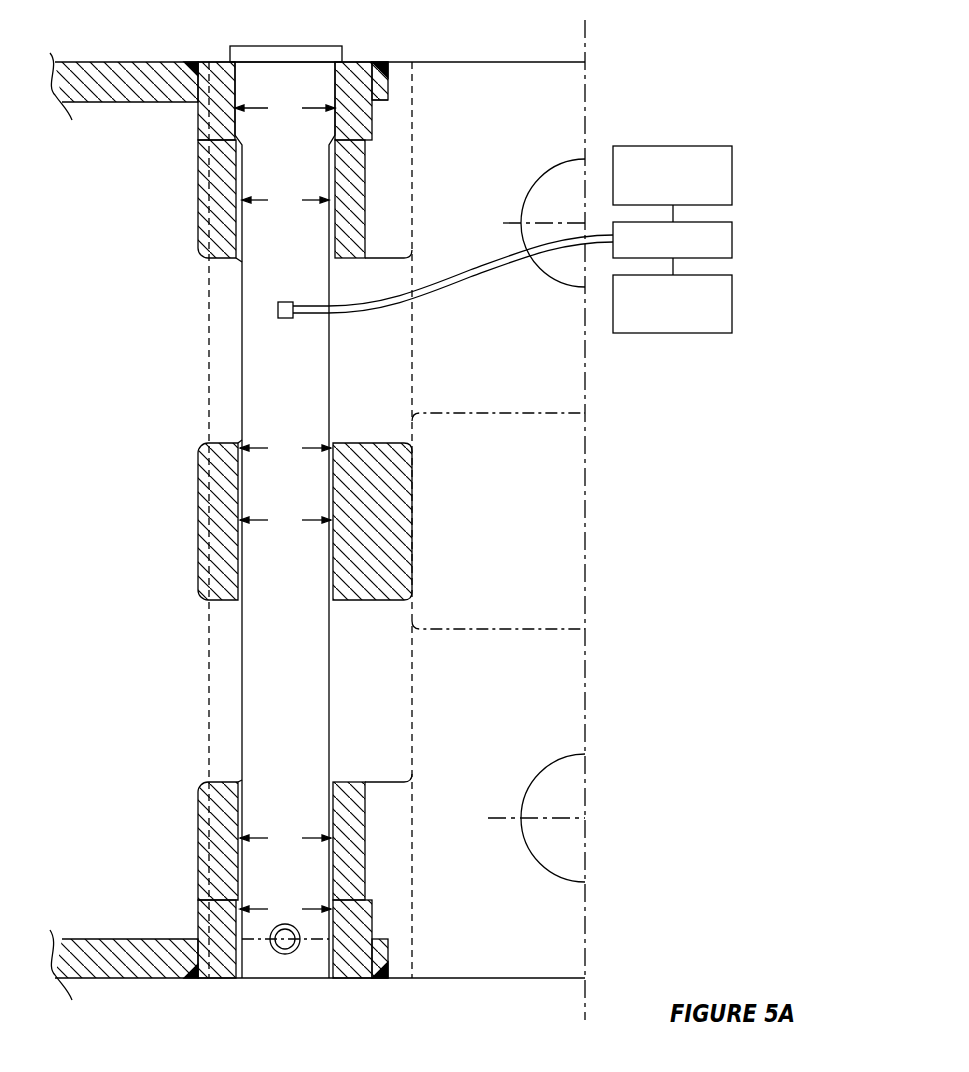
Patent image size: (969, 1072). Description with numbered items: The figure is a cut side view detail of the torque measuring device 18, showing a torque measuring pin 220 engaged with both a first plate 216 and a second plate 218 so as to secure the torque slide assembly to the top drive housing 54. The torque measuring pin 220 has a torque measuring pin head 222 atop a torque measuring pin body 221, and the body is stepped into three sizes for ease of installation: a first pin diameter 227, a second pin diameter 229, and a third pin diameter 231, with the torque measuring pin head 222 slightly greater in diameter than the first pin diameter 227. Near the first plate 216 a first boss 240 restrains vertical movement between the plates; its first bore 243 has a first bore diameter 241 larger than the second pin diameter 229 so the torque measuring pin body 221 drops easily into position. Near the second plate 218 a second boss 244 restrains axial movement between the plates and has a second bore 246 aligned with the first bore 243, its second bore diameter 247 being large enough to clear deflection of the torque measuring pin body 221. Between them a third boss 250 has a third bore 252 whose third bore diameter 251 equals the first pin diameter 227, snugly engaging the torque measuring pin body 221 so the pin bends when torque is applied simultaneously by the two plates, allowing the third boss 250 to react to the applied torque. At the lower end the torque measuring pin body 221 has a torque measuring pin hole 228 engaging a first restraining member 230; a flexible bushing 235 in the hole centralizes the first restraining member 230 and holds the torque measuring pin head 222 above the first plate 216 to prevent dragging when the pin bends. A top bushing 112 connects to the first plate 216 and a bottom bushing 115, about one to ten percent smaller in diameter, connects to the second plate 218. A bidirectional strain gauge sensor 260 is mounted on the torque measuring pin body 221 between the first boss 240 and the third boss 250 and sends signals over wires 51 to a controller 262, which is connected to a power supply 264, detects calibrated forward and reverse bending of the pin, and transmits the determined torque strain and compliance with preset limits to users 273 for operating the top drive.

The torque measuring device 18 is at (385, 110).
The wires 51 is at (462, 283).
The top drive housing 54 is at (550, 110).
The top bushing 112 is at (373, 85).
The bottom bushing 115 is at (372, 958).
The first plate 216 is at (133, 62).
The second plate 218 is at (140, 978).
The torque measuring pin 220 is at (333, 352).
The torque measuring pin body 221 is at (329, 685).
The torque measuring pin head 222 is at (317, 46).
The first pin diameter 227 is at (285, 519).
The torque measuring pin hole 228 is at (289, 950).
The second pin diameter 229 is at (285, 107).
The first restraining member 230 is at (279, 951).
The third pin diameter 231 is at (285, 908).
The flexible bushing 235 is at (301, 952).
The first boss 240 is at (198, 192).
The first bore diameter 241 is at (285, 199).
The first bore 243 is at (240, 262).
The second boss 244 is at (198, 843).
The second bore 246 is at (240, 780).
The second bore diameter 247 is at (285, 837).
The third boss 250 is at (198, 525).
The third bore diameter 251 is at (285, 447).
The third bore 252 is at (243, 440).
The bidirectional strain gauge sensor 260 is at (278, 316).
The controller 262 is at (732, 240).
The power supply 264 is at (732, 175).
The users 273 is at (732, 305).